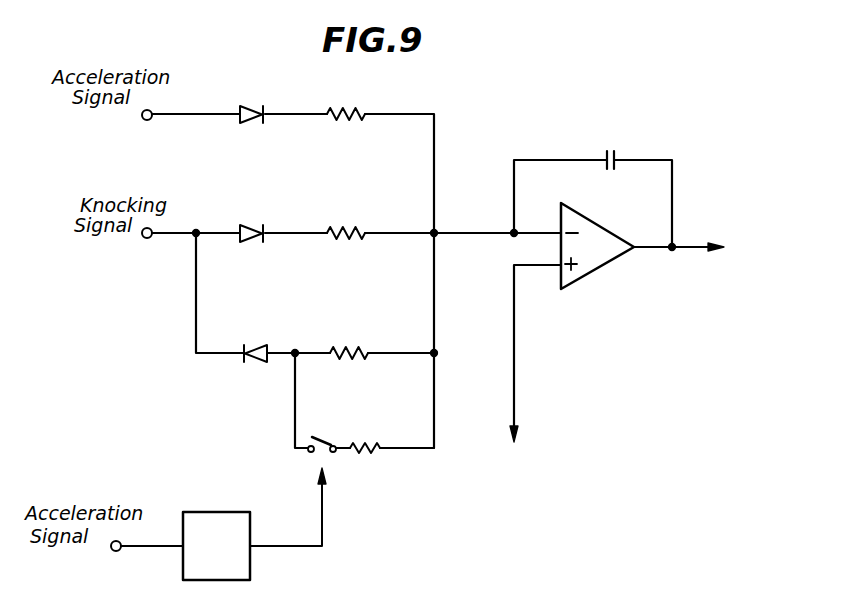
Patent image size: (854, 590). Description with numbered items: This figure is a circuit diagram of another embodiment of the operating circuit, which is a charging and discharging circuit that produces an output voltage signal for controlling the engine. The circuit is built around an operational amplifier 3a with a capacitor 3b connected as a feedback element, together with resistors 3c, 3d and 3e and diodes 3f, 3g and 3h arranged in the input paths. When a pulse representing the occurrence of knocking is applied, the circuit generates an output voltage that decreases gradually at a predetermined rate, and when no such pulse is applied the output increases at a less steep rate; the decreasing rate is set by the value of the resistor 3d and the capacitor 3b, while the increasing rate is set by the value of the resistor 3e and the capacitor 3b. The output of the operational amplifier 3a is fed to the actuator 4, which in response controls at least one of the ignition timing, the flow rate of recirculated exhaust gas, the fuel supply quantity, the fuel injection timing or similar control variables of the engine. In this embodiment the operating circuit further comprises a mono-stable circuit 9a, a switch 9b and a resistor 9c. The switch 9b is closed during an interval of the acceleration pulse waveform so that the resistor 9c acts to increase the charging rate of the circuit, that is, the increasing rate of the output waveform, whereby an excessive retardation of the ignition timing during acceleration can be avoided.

The operational amplifier 3a is at (598, 272).
The capacitor 3b is at (620, 144).
The resistor 3c is at (350, 118).
The resistor 3d is at (350, 238).
The resistor 3e is at (353, 358).
The diode 3f is at (254, 122).
The diode 3g is at (254, 241).
The diode 3h is at (258, 362).
The mono-stable circuit 9a is at (212, 511).
The switch 9b is at (323, 458).
The resistor 9c is at (370, 452).
The actuator 4 is at (714, 274).